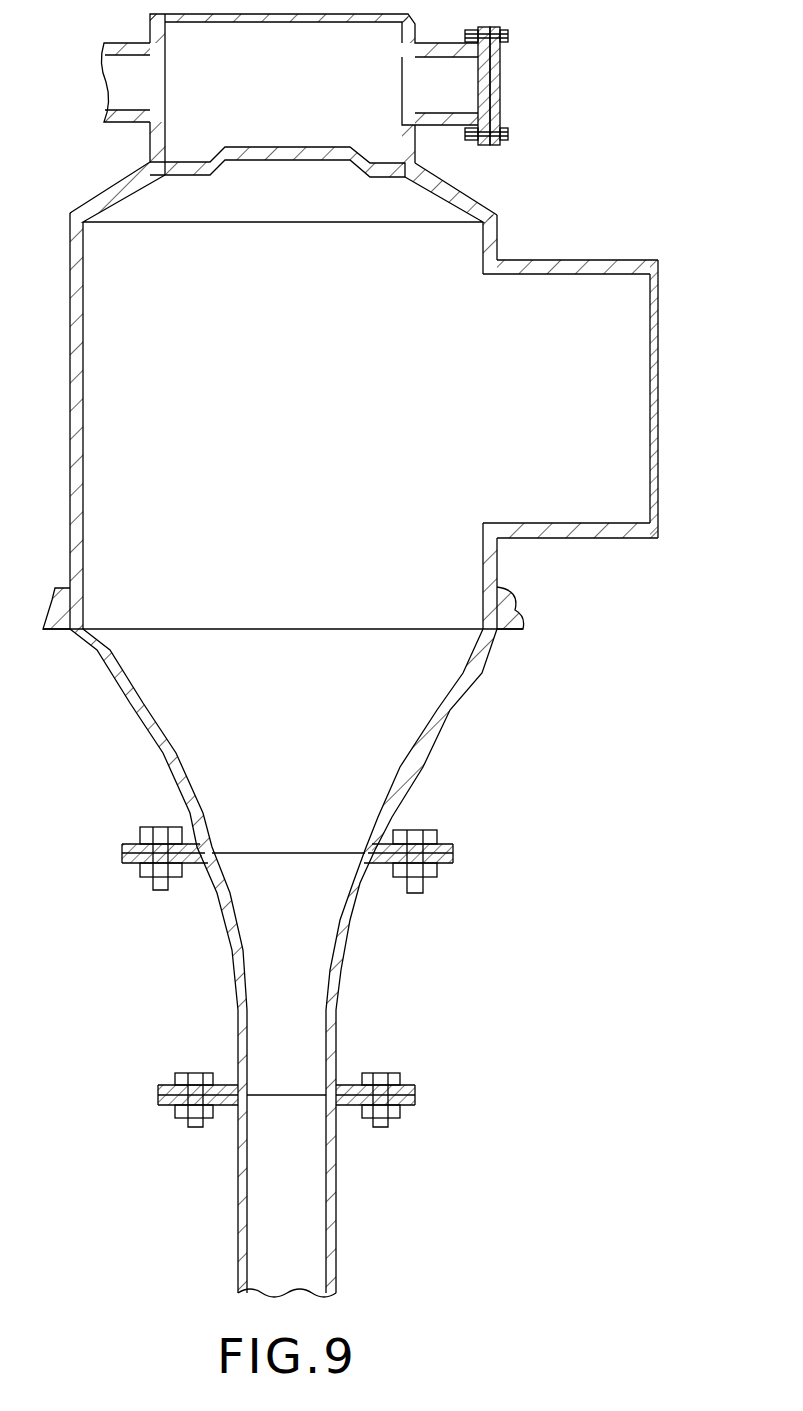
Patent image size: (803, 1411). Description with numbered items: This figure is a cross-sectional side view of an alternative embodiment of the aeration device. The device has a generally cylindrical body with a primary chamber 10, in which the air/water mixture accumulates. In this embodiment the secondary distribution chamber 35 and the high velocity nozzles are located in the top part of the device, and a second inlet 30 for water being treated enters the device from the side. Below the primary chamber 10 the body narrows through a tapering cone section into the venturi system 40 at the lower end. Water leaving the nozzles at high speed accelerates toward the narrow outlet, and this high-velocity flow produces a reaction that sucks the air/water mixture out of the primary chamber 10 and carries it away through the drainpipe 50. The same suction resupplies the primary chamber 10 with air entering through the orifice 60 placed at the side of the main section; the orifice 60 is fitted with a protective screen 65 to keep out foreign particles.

The primary chamber 10 is at (308, 445).
The second inlet 30 is at (112, 92).
The secondary distribution chamber 35 is at (318, 98).
The venturi system 40 is at (300, 980).
The drainpipe 50 is at (302, 1218).
The orifice 60 is at (584, 402).
The protective screen 65 is at (658, 376).